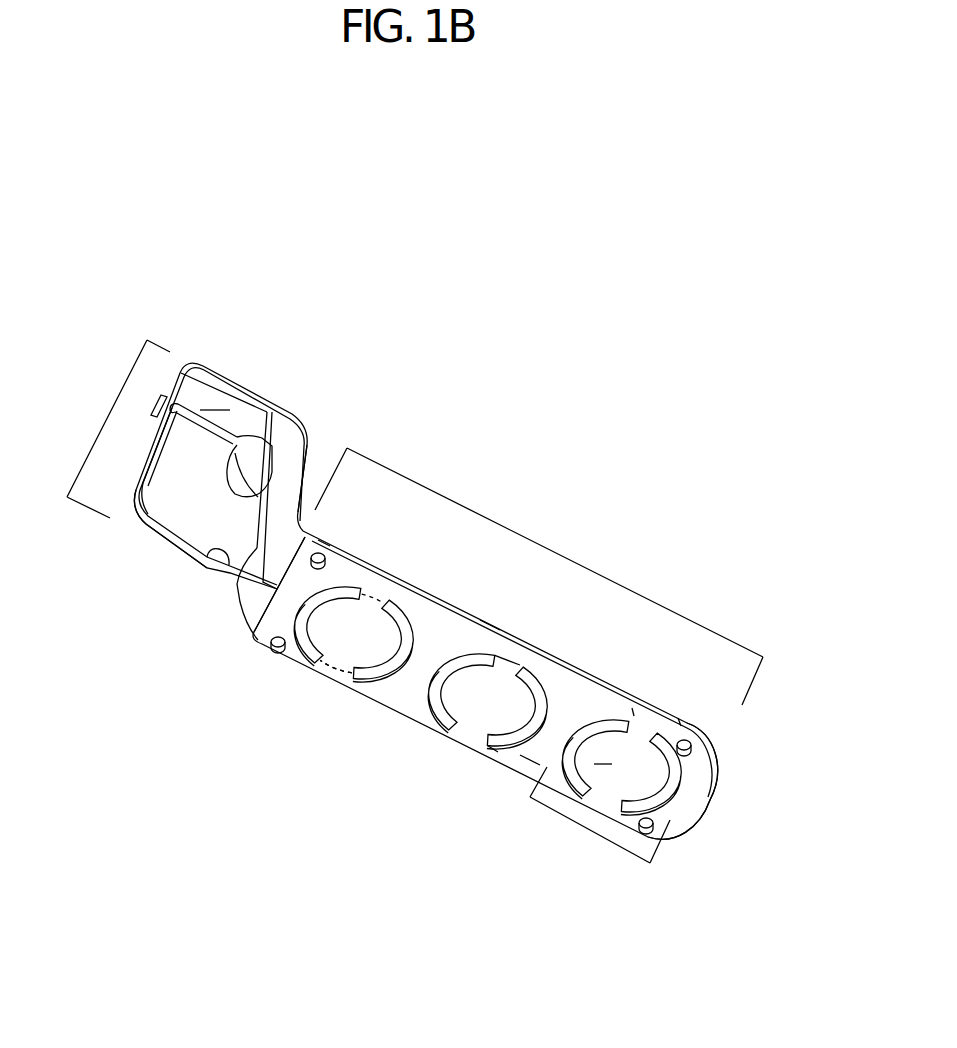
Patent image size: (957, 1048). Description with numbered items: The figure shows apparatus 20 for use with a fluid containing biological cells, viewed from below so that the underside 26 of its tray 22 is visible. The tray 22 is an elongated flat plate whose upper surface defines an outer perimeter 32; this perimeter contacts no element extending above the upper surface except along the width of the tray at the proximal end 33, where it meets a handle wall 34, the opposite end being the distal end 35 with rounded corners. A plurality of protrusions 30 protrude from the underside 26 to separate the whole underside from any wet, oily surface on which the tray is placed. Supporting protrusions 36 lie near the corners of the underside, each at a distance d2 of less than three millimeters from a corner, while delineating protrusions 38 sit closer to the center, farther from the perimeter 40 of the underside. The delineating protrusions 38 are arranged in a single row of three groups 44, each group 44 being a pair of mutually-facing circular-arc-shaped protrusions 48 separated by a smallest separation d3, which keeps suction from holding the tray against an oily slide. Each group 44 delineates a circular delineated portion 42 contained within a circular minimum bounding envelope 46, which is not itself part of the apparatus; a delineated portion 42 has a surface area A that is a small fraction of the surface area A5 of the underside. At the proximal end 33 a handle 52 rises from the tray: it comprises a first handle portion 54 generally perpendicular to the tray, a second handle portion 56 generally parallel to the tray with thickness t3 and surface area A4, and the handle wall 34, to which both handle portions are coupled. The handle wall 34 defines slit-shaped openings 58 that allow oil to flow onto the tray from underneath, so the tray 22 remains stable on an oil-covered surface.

The apparatus 20 is at (680, 498).
The tray 22 is at (539, 576).
The underside 26 is at (398, 706).
The protrusions 30 is at (475, 705).
The outer perimeter 32 is at (449, 599).
The proximal end 33 is at (267, 608).
The handle wall 34 is at (296, 462).
The distal end 35 is at (692, 823).
The supporting protrusions 36 is at (274, 651).
The delineating protrusions 38 is at (497, 750).
The perimeter 40 is at (489, 626).
The delineated portion 42 is at (384, 651).
The group 44 is at (600, 821).
The minimum bounding envelope 46 is at (323, 672).
The circular-arc-shaped protrusions 48 is at (541, 699).
The handle 52 is at (116, 429).
The first handle portion 54 is at (140, 523).
The second handle portion 56 is at (233, 478).
The slit-shaped openings 58 is at (255, 462).
The distance d2 is at (318, 540).
The smallest separation d3 is at (506, 662).
The thickness t3 is at (188, 562).
The surface area A4 is at (215, 399).
The surface area A5 is at (530, 760).
The surface area A is at (603, 751).